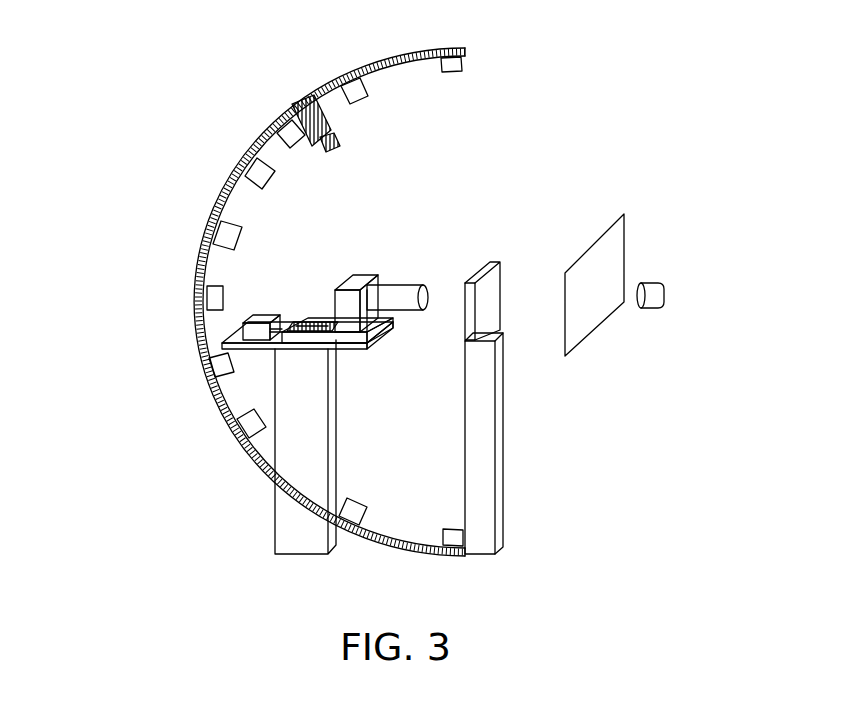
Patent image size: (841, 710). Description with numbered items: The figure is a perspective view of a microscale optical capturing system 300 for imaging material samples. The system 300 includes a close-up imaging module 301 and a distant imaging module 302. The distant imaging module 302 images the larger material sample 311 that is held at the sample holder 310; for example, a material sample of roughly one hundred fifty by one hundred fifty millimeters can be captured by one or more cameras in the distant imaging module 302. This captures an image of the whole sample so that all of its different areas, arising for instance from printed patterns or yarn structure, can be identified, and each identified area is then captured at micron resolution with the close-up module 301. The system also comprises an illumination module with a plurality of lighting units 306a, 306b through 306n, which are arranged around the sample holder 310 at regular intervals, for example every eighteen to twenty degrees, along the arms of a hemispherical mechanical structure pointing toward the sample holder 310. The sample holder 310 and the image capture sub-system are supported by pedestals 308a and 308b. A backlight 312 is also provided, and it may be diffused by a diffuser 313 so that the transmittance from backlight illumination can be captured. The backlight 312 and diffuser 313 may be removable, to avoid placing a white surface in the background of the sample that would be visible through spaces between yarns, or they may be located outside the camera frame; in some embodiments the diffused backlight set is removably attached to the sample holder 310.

The system 300 is at (122, 158).
The close-up imaging module 301 is at (344, 242).
The distant imaging module 302 is at (284, 103).
The lighting unit 306a is at (462, 62).
The lighting unit 306b is at (366, 96).
The lighting unit 306n is at (463, 533).
The pedestal 308a is at (273, 528).
The pedestal 308b is at (502, 440).
The sample holder 310 is at (490, 328).
The material sample 311 is at (492, 252).
The diffuser 313 is at (623, 208).
The backlight 312 is at (670, 297).